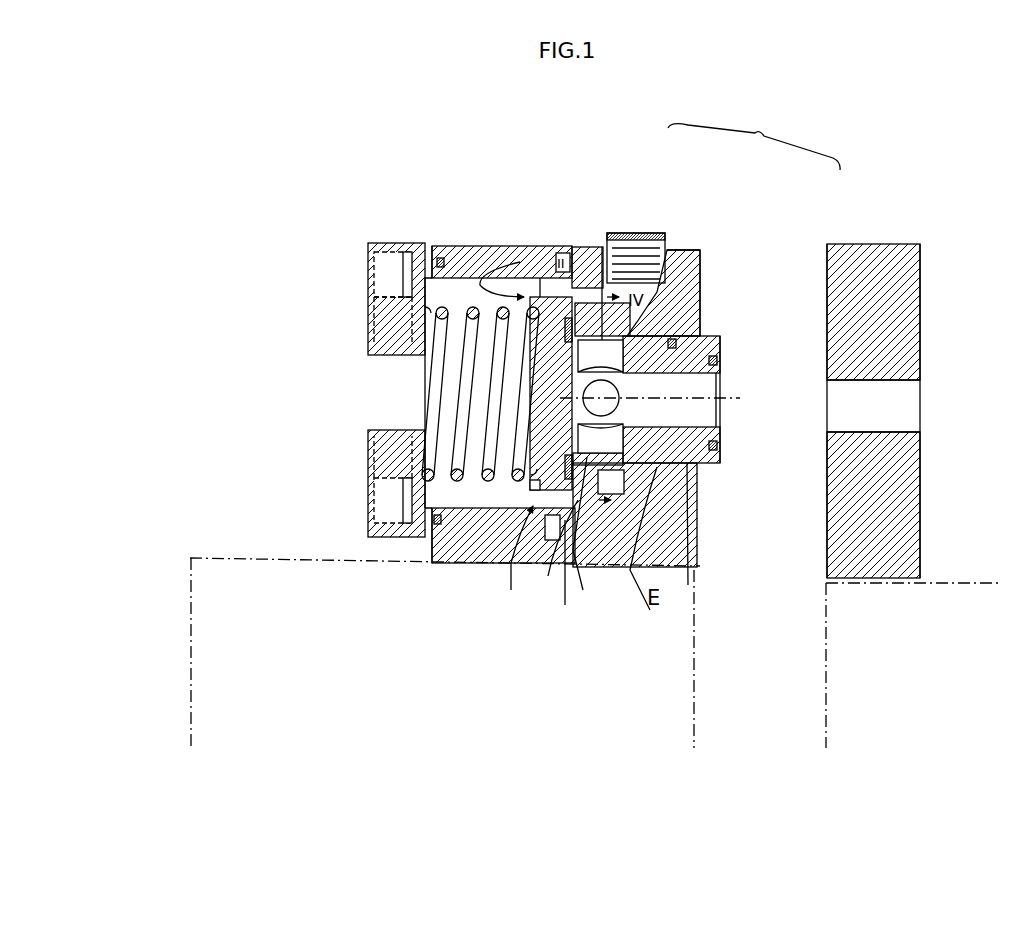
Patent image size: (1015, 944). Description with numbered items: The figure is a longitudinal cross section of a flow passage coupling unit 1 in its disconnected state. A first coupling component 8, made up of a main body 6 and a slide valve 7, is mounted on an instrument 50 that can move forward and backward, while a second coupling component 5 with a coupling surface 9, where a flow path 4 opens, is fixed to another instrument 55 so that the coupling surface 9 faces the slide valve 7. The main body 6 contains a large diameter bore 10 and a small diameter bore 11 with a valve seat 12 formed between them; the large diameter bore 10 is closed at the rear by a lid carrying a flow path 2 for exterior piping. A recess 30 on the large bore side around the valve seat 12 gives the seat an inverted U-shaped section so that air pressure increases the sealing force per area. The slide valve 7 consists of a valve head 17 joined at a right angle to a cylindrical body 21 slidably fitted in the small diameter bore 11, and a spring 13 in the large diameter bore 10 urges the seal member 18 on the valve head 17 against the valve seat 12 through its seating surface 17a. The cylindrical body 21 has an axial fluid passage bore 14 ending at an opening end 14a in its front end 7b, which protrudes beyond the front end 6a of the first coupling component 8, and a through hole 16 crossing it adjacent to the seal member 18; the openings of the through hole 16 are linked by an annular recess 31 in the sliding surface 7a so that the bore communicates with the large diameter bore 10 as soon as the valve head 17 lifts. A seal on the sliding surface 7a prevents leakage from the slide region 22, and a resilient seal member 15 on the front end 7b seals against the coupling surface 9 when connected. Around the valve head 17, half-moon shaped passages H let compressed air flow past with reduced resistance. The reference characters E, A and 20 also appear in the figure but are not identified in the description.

The flow passage coupling unit 1 is at (840, 150).
The flow path 2 is at (378, 355).
The flow path 4 is at (892, 382).
The second coupling component 5 is at (832, 246).
The main body 6 is at (470, 246).
The front end 6a is at (690, 517).
The slide valve 7 is at (455, 246).
The sliding surface 7a is at (713, 336).
The front end 7b is at (717, 336).
The first coupling component 8 is at (492, 238).
The coupling surface 9 is at (826, 458).
The large diameter bore 10 is at (512, 247).
The small diameter bore 11 is at (678, 252).
The valve seat 12 is at (582, 247).
The spring 13 is at (488, 482).
The fluid passage bore 14 is at (685, 376).
The opening end 14a is at (716, 410).
The resilient seal member 15 is at (718, 360).
The through hole 16 is at (601, 249).
The valve head 17 is at (542, 280).
The seating surface 17a is at (596, 533).
The seal member 18 is at (552, 551).
The retainer 20 is at (696, 253).
The cylindrical body 21 is at (693, 536).
The slide region 22 is at (668, 240).
The recess 30 is at (566, 576).
The annular recess 31 is at (652, 550).
The instrument 50 is at (224, 558).
The another instrument 55 is at (960, 596).
The valve element E is at (670, 348).
The ball A is at (620, 382).
The passage H is at (506, 263).